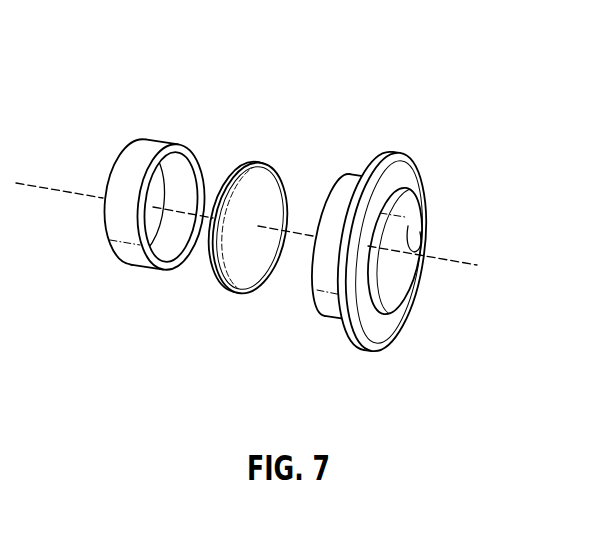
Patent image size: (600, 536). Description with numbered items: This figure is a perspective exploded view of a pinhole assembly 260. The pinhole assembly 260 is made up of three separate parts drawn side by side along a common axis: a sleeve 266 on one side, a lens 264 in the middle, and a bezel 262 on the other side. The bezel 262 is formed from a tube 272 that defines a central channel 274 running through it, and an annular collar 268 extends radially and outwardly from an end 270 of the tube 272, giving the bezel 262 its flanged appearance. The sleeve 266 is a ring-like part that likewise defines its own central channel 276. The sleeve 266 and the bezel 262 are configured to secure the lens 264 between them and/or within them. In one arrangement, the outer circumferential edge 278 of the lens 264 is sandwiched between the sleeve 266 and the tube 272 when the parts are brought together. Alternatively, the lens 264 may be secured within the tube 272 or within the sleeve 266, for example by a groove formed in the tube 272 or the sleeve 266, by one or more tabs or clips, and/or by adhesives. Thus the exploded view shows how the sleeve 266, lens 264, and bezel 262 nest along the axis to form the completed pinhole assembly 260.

The pinhole assembly 260 is at (418, 80).
The bezel 262 is at (400, 234).
The lens 264 is at (276, 248).
The sleeve 266 is at (169, 230).
The annular collar 268 is at (405, 183).
The end 270 is at (420, 244).
The tube 272 is at (353, 190).
The central channel 274 is at (380, 263).
The central channel 276 is at (186, 186).
The outer circumferential edge 278 is at (263, 173).